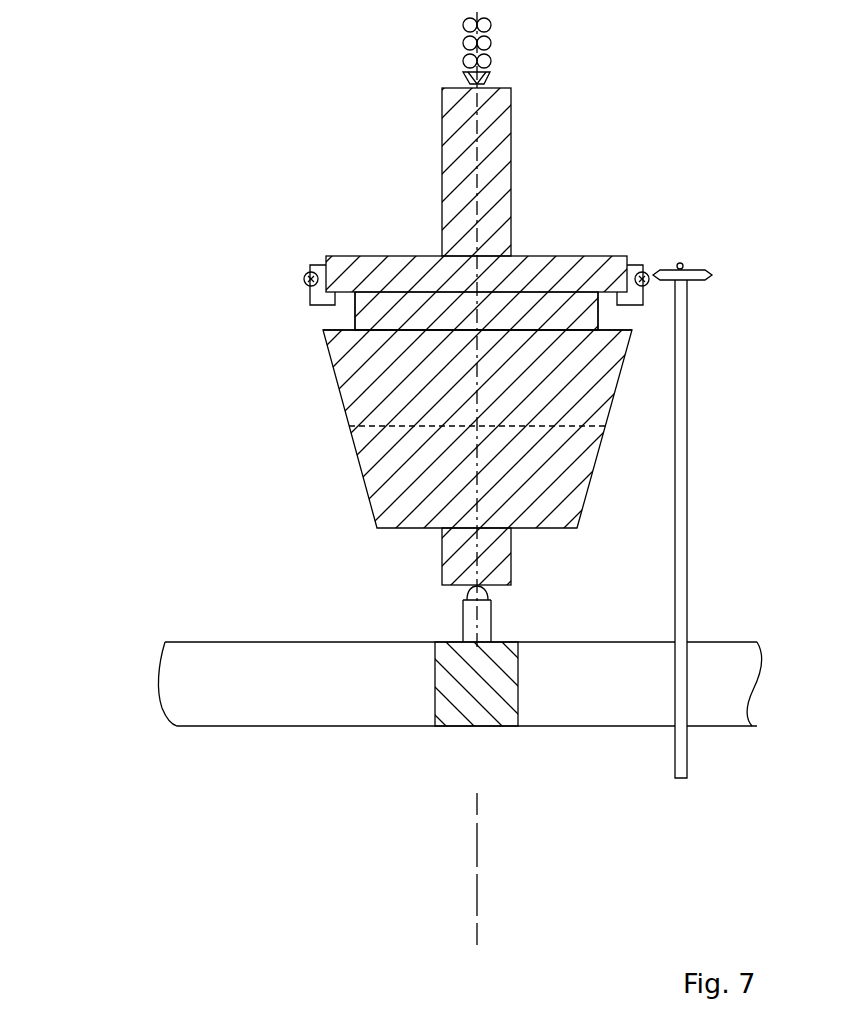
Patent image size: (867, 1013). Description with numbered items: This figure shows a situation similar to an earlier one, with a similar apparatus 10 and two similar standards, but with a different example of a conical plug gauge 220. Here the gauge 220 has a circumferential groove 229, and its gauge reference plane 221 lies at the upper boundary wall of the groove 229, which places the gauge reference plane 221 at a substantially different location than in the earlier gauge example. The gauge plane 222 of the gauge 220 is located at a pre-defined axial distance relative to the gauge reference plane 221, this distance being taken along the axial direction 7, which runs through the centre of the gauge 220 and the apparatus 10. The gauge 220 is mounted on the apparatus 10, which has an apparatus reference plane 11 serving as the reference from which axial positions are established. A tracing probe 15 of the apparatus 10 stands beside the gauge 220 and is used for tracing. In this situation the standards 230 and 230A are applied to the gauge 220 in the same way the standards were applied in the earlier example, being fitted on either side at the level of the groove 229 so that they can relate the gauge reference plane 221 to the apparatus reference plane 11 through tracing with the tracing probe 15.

The conical plug gauge 220 is at (185, 162).
The standard 230 is at (315, 243).
The standard 230A is at (634, 242).
The circumferential groove 229 is at (295, 318).
The gauge reference plane 221 is at (322, 331).
The gauge plane 222 is at (585, 428).
The tracing probe 15 is at (687, 262).
The apparatus 10 is at (138, 690).
The apparatus reference plane 11 is at (445, 650).
The axial direction 7 is at (477, 868).